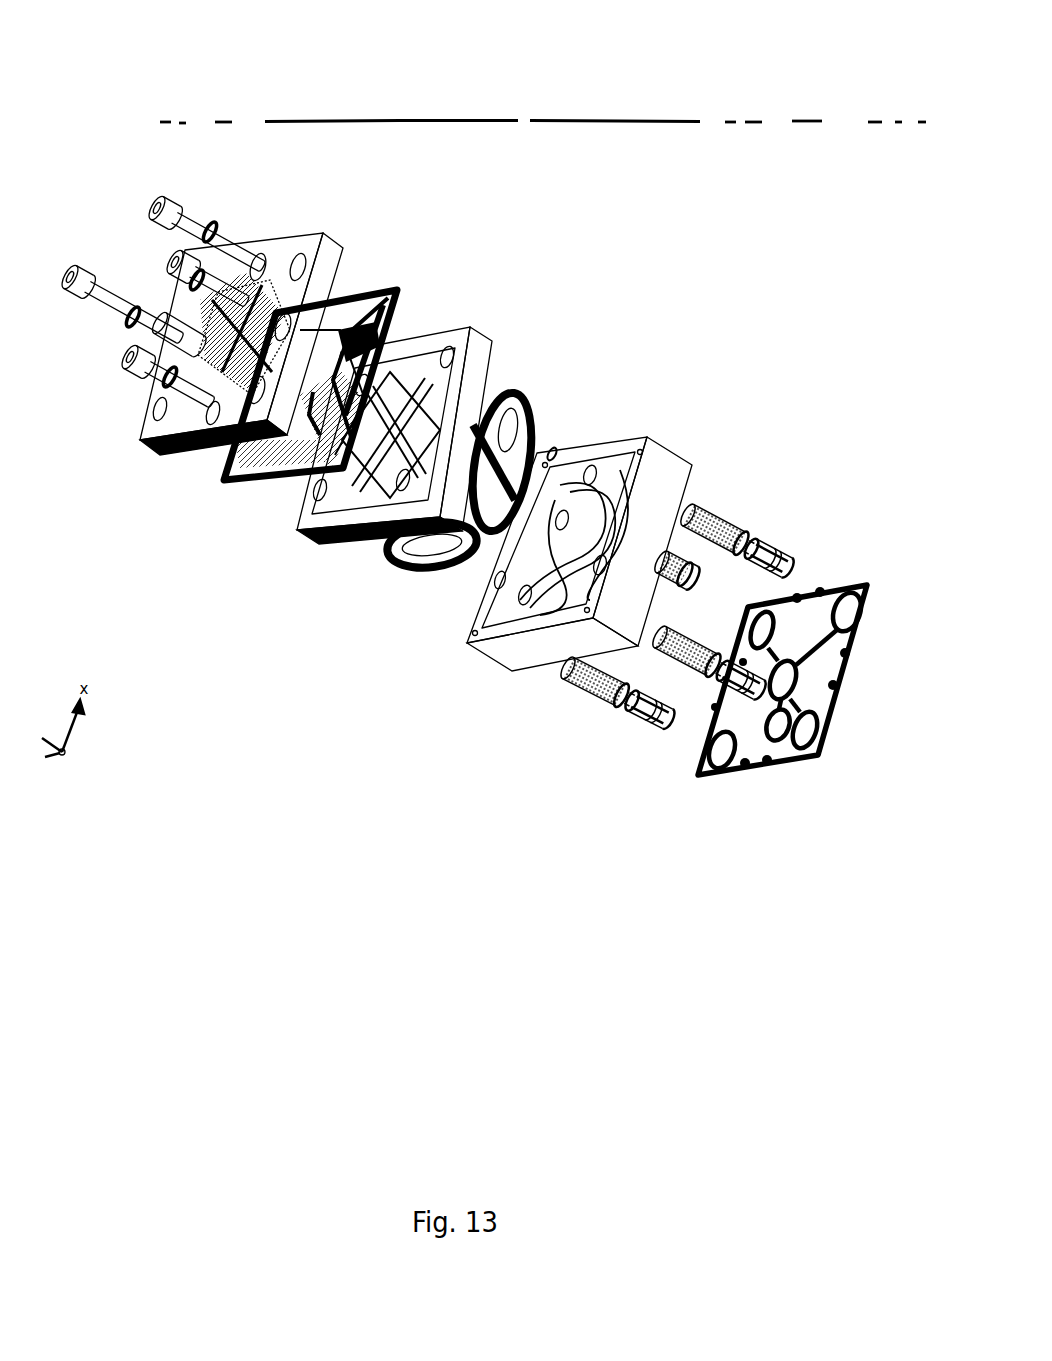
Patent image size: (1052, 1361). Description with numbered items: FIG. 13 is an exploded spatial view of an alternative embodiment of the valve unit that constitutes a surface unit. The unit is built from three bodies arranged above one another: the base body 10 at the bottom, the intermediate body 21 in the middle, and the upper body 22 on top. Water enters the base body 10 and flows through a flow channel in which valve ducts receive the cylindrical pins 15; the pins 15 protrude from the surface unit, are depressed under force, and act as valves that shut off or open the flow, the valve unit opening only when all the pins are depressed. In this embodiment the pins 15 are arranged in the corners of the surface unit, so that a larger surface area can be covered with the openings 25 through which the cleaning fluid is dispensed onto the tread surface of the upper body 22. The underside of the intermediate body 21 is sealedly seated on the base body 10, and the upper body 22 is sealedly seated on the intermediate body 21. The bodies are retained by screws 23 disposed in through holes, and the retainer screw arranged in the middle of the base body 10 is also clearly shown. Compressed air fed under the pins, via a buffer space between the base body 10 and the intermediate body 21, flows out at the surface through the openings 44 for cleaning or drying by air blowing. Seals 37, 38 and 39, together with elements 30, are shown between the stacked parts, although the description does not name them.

The base body 10 is at (611, 441).
The pins 15 is at (678, 743).
The intermediate body 21 is at (449, 331).
The upper body 22 is at (304, 237).
The screws 23 is at (112, 298).
The openings 25 is at (147, 440).
The screws 30 is at (185, 330).
The first seal 37 is at (394, 284).
The second seal 38 is at (527, 383).
The third seal 39 is at (787, 762).
The openings 44 is at (273, 628).